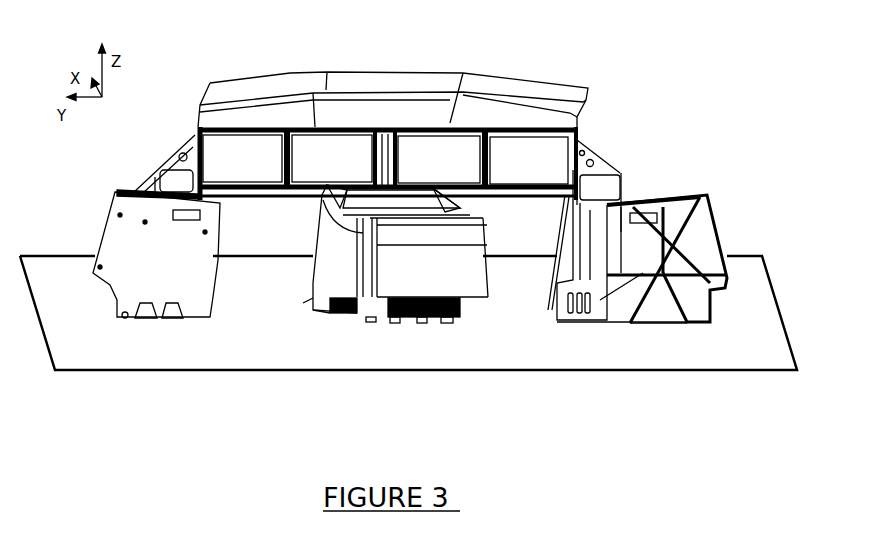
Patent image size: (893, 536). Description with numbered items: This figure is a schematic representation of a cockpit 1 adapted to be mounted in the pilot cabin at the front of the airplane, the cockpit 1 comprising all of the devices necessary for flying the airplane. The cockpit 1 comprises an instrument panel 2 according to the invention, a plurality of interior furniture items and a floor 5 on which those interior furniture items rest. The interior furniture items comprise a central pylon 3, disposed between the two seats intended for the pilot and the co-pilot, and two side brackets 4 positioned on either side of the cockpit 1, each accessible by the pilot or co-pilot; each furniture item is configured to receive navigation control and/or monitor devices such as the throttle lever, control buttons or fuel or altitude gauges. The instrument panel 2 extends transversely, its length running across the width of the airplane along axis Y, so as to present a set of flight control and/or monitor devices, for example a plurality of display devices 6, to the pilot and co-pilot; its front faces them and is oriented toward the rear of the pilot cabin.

The cockpit 1 is at (693, 64).
The instrument panel 2 is at (589, 135).
The central pylon 3 is at (392, 277).
The side brackets 4 is at (98, 235).
The floor 5 is at (535, 371).
The display devices 6 is at (515, 153).